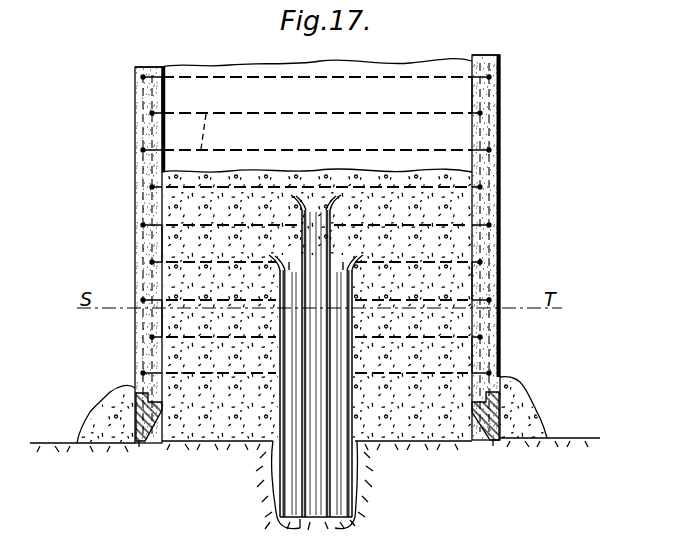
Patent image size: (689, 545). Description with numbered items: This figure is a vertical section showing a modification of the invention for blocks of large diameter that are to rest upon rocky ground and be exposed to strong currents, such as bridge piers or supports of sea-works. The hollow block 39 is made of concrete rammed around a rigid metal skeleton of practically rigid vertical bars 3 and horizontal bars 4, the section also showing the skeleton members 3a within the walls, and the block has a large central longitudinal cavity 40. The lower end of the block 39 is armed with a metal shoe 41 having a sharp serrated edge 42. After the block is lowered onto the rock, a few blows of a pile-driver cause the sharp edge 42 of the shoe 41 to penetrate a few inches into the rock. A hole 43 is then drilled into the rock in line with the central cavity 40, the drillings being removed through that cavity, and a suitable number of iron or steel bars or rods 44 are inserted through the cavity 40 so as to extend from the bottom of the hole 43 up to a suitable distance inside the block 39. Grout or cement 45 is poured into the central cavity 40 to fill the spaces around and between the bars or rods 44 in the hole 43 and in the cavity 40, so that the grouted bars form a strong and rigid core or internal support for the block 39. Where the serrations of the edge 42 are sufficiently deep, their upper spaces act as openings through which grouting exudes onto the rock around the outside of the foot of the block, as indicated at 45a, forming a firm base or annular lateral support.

The vertical bars 3 is at (143, 215).
The wall reinforcing ties 3a is at (472, 128).
The horizontal bars 4 is at (207, 131).
The hollow block 39 is at (135, 172).
The central longitudinal cavity 40 is at (317, 104).
The metal shoe 41 is at (140, 412).
The sharp serrated edge 42 is at (140, 447).
The hole 43 is at (272, 480).
The bars or rods 44 is at (293, 440).
The grout or cement 45 is at (375, 197).
The exuded grouting 45a is at (547, 383).